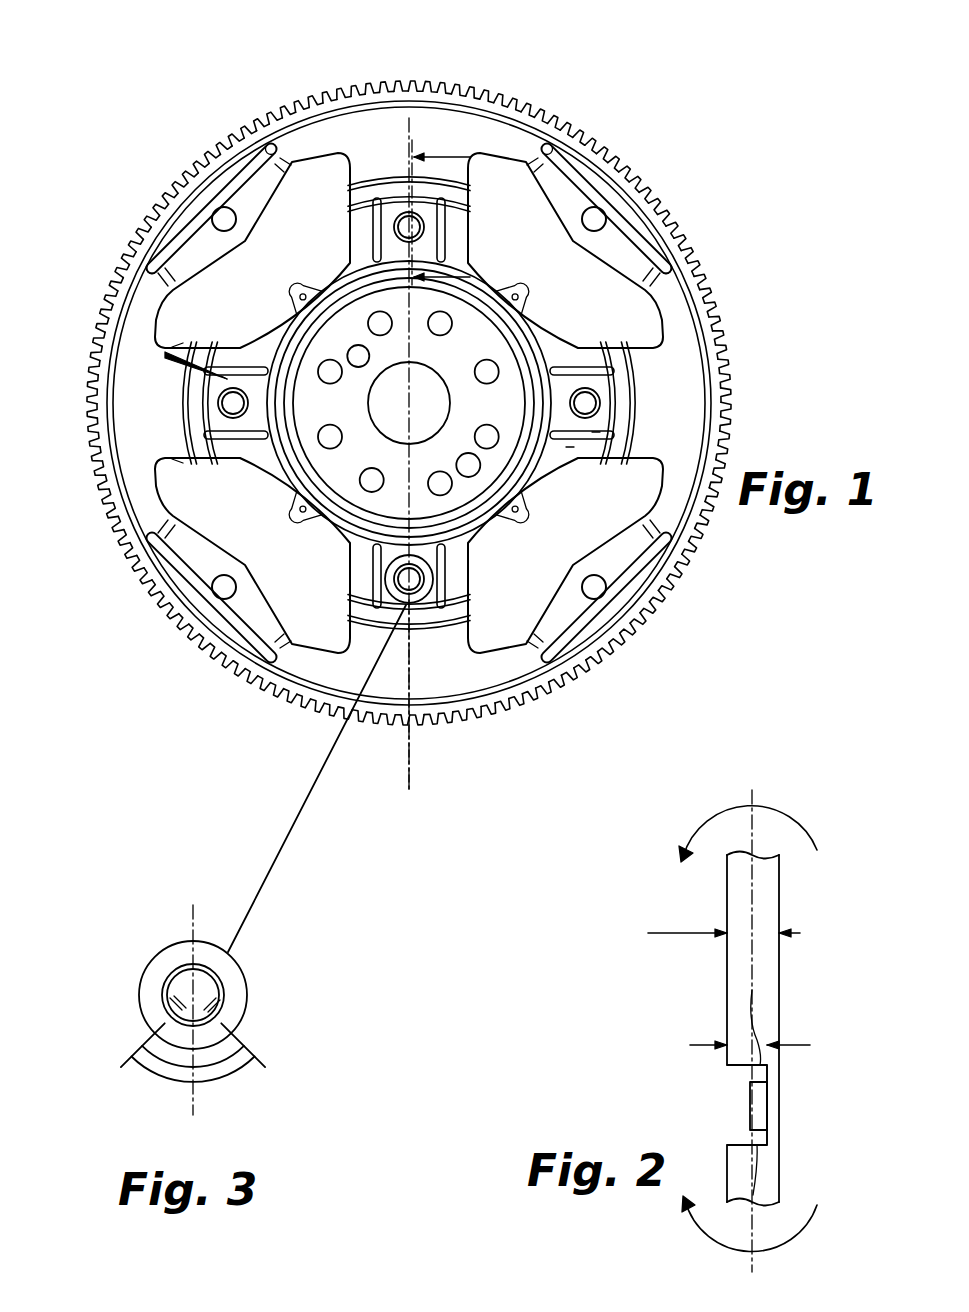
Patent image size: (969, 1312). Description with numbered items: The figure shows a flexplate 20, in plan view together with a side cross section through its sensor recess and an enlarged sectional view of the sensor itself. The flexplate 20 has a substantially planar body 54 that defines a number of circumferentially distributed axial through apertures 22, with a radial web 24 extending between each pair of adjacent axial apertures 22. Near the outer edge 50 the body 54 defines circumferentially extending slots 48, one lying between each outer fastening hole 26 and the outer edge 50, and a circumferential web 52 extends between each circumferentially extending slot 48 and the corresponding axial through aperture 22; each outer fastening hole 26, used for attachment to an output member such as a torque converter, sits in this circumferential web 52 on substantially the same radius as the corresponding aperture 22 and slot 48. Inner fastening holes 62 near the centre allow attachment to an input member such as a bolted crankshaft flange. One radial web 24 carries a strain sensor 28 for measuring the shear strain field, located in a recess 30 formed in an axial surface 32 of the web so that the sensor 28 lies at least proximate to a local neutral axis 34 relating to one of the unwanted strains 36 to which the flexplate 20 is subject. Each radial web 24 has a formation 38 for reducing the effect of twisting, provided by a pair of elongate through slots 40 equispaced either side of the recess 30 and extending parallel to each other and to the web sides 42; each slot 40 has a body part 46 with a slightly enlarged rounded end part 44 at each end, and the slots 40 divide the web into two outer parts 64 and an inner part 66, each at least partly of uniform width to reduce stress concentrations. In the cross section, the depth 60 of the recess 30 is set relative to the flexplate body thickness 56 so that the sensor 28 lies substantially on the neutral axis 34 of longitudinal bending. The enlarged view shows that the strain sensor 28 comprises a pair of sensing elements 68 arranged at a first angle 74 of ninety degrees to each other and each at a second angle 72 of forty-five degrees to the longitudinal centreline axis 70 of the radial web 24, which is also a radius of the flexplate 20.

In FIG. 1, the flexplate 20 is at (650, 113).
In FIG. 1, the axial through apertures 22 is at (334, 152).
In FIG. 1, the radial web 24 is at (520, 170).
In FIG. 1, the outer fastening holes 26 is at (603, 212).
In FIG. 2, the strain sensor 28 is at (750, 1097).
In FIG. 3, the strain sensor 28 is at (180, 980).
In FIG. 1, the recess 30 is at (406, 213).
In FIG. 2, the recess 30 is at (733, 1077).
In FIG. 3, the recess 30 is at (222, 980).
In FIG. 1, the axial surface 32 is at (432, 212).
In FIG. 2, the neutral axis 34 is at (750, 990).
In FIG. 2, the unwanted strains 36 is at (753, 1043).
In FIG. 1, the formation 38 is at (372, 180).
In FIG. 1, the elongate through slots 40 is at (613, 367).
In FIG. 1, the side 42 is at (183, 343).
In FIG. 1, the rounded end part 44 is at (165, 355).
In FIG. 1, the body part 46 is at (225, 379).
In FIG. 1, the circumferentially extending slots 48 is at (567, 156).
In FIG. 1, the outer edge 50 is at (328, 175).
In FIG. 1, the circumferential web 52 is at (612, 655).
In FIG. 1, the body 54 is at (337, 327).
In FIG. 2, the body 54 is at (727, 957).
In FIG. 2, the flexplate body thickness 56 is at (723, 916).
In FIG. 2, the depth 60 is at (763, 1042).
In FIG. 1, the inner fastening holes 62 is at (390, 600).
In FIG. 1, the outer parts 64 is at (570, 450).
In FIG. 1, the inner part 66 is at (596, 434).
In FIG. 3, the sensing elements 68 is at (176, 998).
In FIG. 1, the longitudinal centreline axis 70 is at (419, 740).
In FIG. 3, the longitudinal centreline axis 70 is at (190, 908).
In FIG. 3, the second angle 72 is at (172, 1082).
In FIG. 3, the first angle 74 is at (142, 1062).